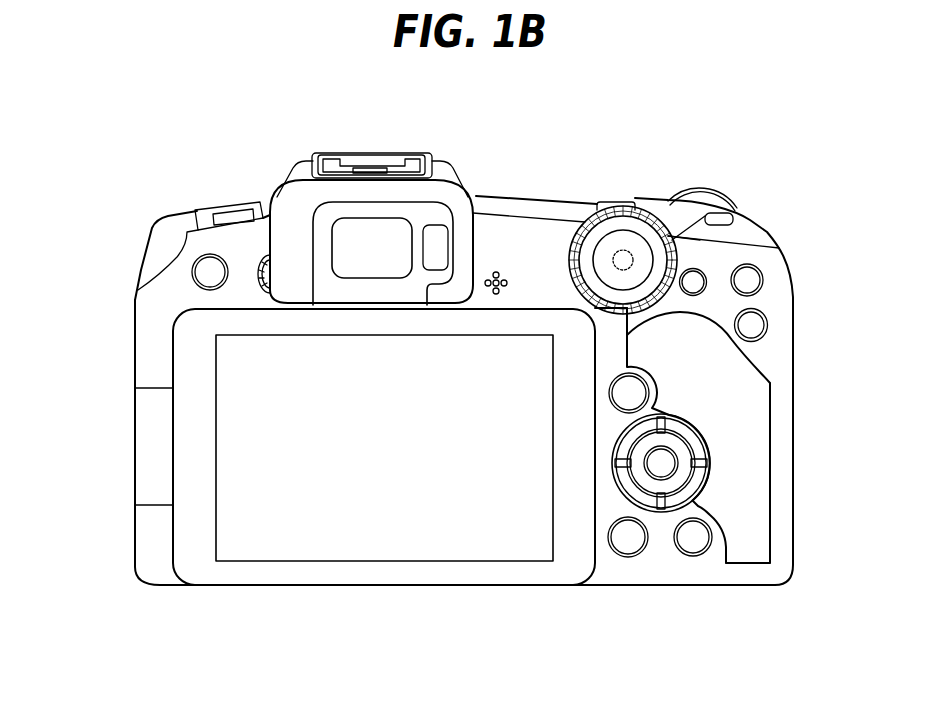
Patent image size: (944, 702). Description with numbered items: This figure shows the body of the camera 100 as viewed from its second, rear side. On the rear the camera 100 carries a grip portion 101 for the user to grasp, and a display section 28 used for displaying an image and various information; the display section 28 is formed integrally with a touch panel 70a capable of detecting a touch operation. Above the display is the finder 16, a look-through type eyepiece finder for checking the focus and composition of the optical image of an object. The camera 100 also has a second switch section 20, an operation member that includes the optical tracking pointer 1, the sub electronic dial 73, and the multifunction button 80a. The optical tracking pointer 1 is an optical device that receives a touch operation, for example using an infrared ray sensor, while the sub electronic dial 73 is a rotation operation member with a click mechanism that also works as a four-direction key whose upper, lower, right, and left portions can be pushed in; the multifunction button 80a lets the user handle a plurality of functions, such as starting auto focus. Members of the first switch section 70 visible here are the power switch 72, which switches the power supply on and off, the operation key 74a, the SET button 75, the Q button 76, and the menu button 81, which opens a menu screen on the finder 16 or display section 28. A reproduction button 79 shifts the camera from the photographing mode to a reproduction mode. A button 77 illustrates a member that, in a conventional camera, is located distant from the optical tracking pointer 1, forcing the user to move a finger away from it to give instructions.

The camera 100 is at (522, 156).
The finder 16 is at (368, 238).
The second switch section 20 is at (660, 190).
The multifunction button 80a is at (606, 214).
The optical tracking pointer 1 is at (623, 260).
The sub electronic dial 73 is at (673, 240).
The button 77 is at (747, 281).
The first switch section 70 is at (464, 352).
The power switch 72 is at (207, 208).
The menu button 81 is at (207, 270).
The Q button 76 is at (632, 396).
The SET button 75 is at (663, 463).
The operation key 74a is at (697, 482).
The display section 28 is at (308, 447).
The touch panel 70a is at (265, 457).
The reproduction button 79 is at (694, 544).
The grip portion 101 is at (756, 544).